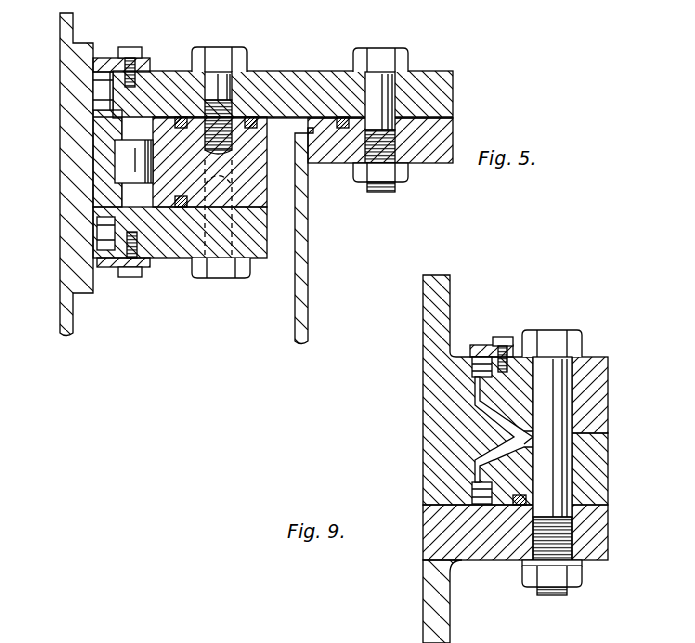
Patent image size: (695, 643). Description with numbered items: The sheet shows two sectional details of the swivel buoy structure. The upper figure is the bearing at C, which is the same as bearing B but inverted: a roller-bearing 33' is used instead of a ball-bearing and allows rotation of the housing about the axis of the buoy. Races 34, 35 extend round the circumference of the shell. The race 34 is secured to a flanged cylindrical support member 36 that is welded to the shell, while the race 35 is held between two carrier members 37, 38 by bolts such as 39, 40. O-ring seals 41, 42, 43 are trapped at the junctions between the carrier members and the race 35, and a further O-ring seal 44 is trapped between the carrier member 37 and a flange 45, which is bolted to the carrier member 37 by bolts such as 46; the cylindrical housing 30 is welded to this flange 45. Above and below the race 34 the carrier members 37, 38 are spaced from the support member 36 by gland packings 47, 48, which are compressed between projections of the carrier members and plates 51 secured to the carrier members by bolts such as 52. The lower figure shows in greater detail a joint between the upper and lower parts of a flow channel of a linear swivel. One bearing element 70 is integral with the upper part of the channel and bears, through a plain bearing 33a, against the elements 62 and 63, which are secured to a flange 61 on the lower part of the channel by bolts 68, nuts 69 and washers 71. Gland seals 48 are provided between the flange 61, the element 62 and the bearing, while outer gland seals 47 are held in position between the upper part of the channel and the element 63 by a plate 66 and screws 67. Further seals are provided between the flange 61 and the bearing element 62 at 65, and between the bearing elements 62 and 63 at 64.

In FIG. 5, the cylindrical housing 30 is at (302, 273).
In FIG. 5, the roller-bearing 33' is at (87, 161).
In FIG. 9, the plain bearing 33a is at (478, 412).
In FIG. 5, the race 34 is at (100, 192).
In FIG. 5, the race 35 is at (253, 193).
In FIG. 5, the flanged cylindrical support member 36 is at (80, 132).
In FIG. 5, the carrier member 37 is at (442, 100).
In FIG. 5, the carrier member 38 is at (260, 237).
In FIG. 5, the bolt 39 is at (218, 60).
In FIG. 5, the bolt 40 is at (220, 267).
In FIG. 5, the O-ring seal 41 is at (180, 116).
In FIG. 5, the O-ring seal 42 is at (250, 116).
In FIG. 5, the O-ring seal 43 is at (180, 208).
In FIG. 5, the O-ring seal 44 is at (340, 116).
In FIG. 5, the flange 45 is at (437, 152).
In FIG. 5, the bolt 46 is at (397, 62).
In FIG. 5, the gland packing 47 is at (100, 90).
In FIG. 9, the gland packing 47 is at (480, 368).
In FIG. 5, the gland packing 48 is at (107, 238).
In FIG. 9, the gland packing 48 is at (478, 490).
In FIG. 5, the plate 51 is at (97, 62).
In FIG. 5, the bolt 52 is at (132, 57).
In FIG. 9, the flange 61 is at (608, 537).
In FIG. 9, the bearing element 62 is at (608, 477).
In FIG. 9, the bearing element 63 is at (600, 382).
In FIG. 9, the seal 64 is at (530, 440).
In FIG. 9, the seal 65 is at (522, 502).
In FIG. 9, the plate 66 is at (480, 345).
In FIG. 9, the screw 67 is at (503, 337).
In FIG. 9, the bolt 68 is at (577, 338).
In FIG. 9, the nut 69 is at (580, 588).
In FIG. 9, the bearing element 70 is at (477, 437).
In FIG. 9, the washer 71 is at (582, 563).